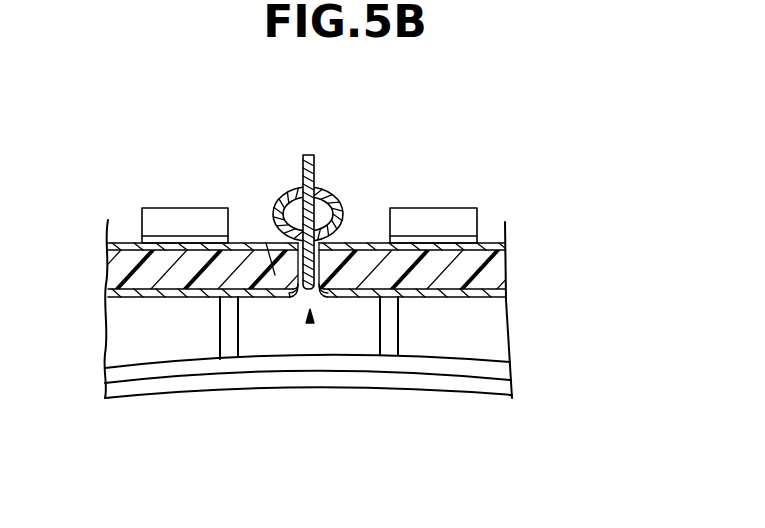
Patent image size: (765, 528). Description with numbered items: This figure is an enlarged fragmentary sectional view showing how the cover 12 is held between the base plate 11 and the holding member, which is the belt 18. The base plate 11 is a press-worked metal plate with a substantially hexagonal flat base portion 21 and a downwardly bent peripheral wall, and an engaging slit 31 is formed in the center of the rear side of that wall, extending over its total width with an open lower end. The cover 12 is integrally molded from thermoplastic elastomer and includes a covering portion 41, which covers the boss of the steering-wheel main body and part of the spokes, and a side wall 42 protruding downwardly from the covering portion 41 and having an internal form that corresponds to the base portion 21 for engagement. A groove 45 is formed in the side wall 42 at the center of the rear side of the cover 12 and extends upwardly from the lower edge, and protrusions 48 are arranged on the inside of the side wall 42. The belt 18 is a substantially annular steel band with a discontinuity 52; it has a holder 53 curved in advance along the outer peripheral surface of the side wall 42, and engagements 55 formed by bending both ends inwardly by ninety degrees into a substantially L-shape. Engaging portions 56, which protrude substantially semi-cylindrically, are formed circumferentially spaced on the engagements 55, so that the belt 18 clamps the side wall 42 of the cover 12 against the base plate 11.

The base plate 11 is at (505, 256).
The cover 12 is at (507, 282).
The belt 18 is at (483, 294).
The base portion 21 is at (493, 243).
The engaging slit 31 is at (285, 242).
The covering portion 41 is at (450, 333).
The side wall 42 is at (497, 268).
The groove 45 is at (282, 292).
The protrusions 48 is at (159, 214).
The discontinuity 52 is at (310, 322).
The holder 53 is at (460, 289).
The engagements 55 is at (302, 158).
The engaging portions 56 is at (287, 192).